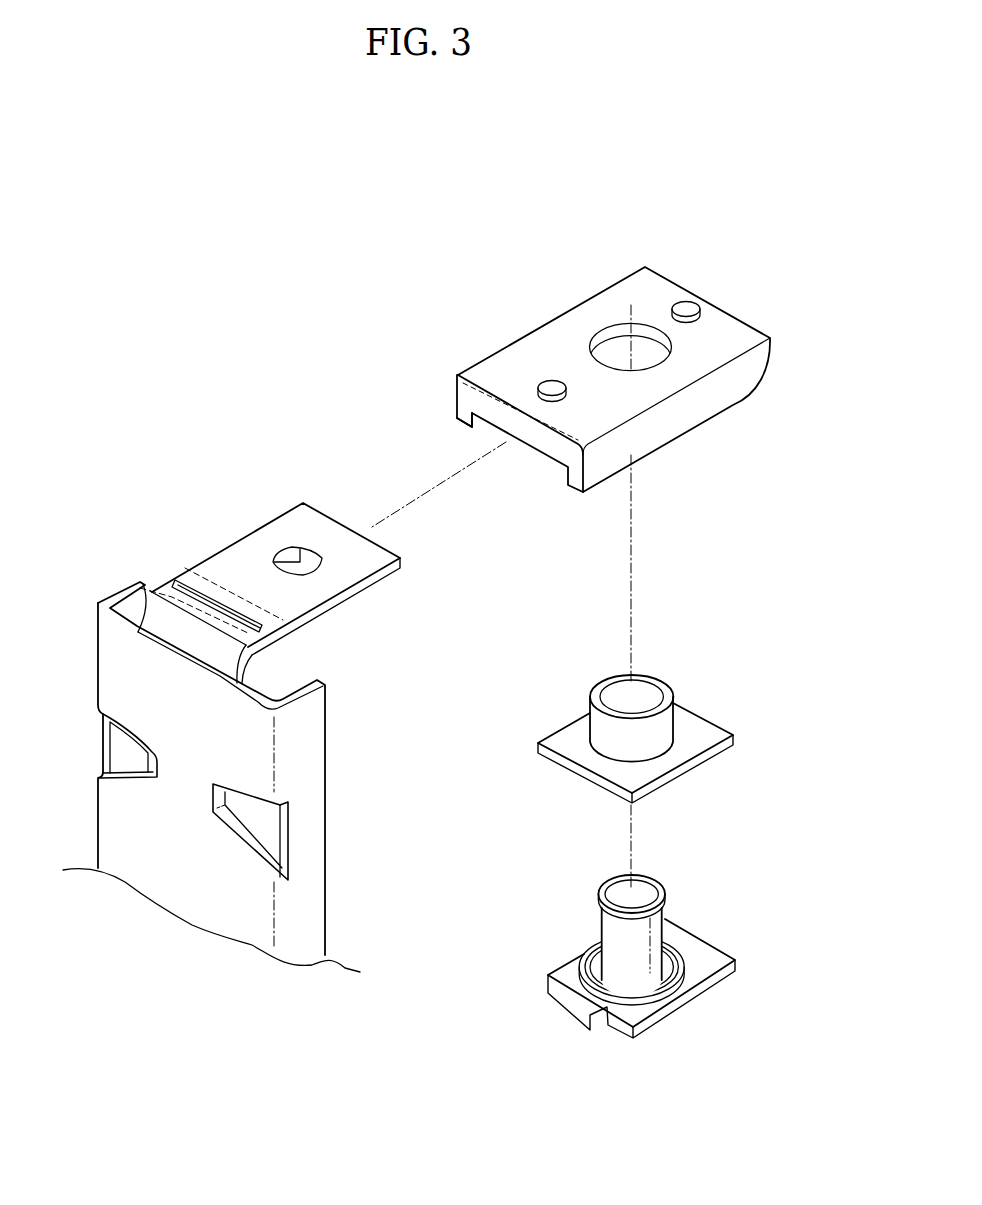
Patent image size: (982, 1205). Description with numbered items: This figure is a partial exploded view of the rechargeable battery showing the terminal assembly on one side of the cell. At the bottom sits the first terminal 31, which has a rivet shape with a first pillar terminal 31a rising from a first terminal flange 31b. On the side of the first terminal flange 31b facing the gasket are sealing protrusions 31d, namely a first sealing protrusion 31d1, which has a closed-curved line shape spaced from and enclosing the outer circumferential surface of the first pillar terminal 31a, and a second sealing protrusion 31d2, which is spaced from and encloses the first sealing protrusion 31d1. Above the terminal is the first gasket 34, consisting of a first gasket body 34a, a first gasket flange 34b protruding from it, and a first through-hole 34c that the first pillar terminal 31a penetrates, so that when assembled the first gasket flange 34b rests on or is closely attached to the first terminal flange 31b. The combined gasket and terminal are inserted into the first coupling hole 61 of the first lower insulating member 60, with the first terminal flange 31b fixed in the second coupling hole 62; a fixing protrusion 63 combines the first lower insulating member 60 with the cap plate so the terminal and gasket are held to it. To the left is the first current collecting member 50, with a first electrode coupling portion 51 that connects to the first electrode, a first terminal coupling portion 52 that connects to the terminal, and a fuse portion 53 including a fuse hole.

The first lower insulating member 60 is at (569, 428).
The first coupling hole 61 is at (603, 335).
The second coupling hole 62 is at (503, 432).
The fixing protrusion 63 is at (547, 388).
The first current collecting member 50 is at (225, 712).
The first electrode coupling portion 51 is at (173, 888).
The first terminal coupling portion 52 is at (273, 538).
The fuse portion 53 is at (168, 588).
The first gasket 34 is at (600, 701).
The first gasket body 34a is at (600, 733).
The first gasket flange 34b is at (580, 755).
The first through-hole 34c is at (630, 712).
The first terminal 31 is at (598, 921).
The first pillar terminal 31a is at (663, 940).
The first terminal flange 31b is at (707, 960).
The sealing protrusions 31d is at (538, 965).
The first sealing protrusion 31d1 is at (585, 955).
The second sealing protrusion 31d2 is at (583, 974).